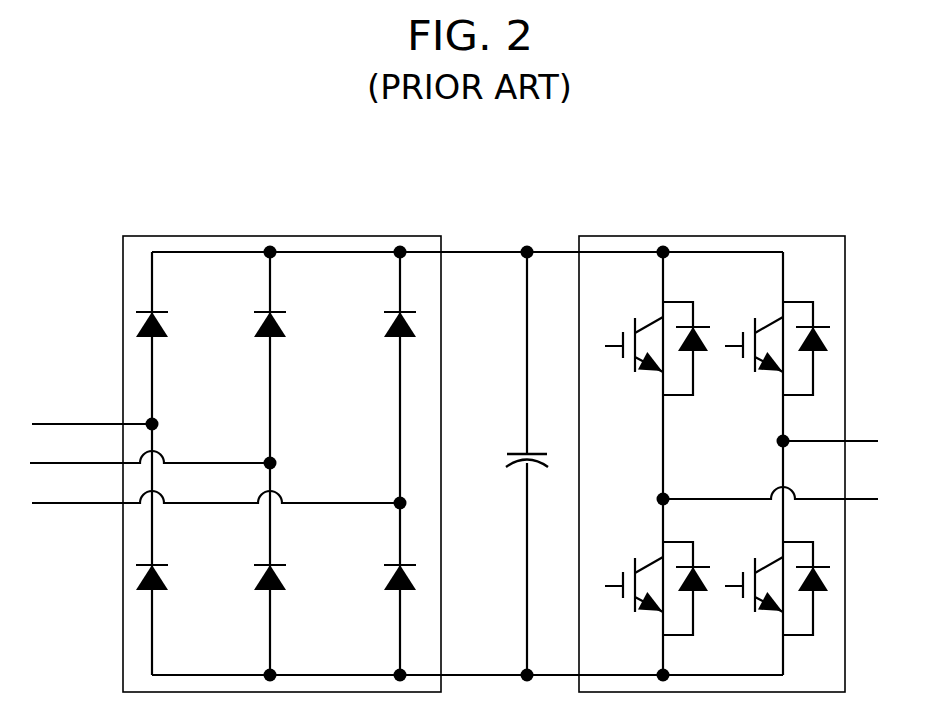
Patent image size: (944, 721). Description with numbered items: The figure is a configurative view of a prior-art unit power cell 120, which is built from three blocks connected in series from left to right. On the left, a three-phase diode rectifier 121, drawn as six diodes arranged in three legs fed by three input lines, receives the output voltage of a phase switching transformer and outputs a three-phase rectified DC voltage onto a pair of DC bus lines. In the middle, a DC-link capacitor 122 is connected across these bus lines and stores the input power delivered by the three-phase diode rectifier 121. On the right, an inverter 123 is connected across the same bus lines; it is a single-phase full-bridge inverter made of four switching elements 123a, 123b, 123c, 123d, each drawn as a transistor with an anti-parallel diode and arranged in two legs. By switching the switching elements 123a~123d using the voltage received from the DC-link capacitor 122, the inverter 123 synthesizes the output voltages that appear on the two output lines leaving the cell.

The unit power cell 120 is at (772, 158).
The 3-phase diode rectifier 121 is at (281, 236).
The DC-link capacitor 122 is at (517, 453).
The inverter 123 is at (709, 236).
The switching element 123a is at (657, 337).
The switching element 123b is at (657, 576).
The switching element 123c is at (777, 337).
The switching element 123d is at (777, 576).